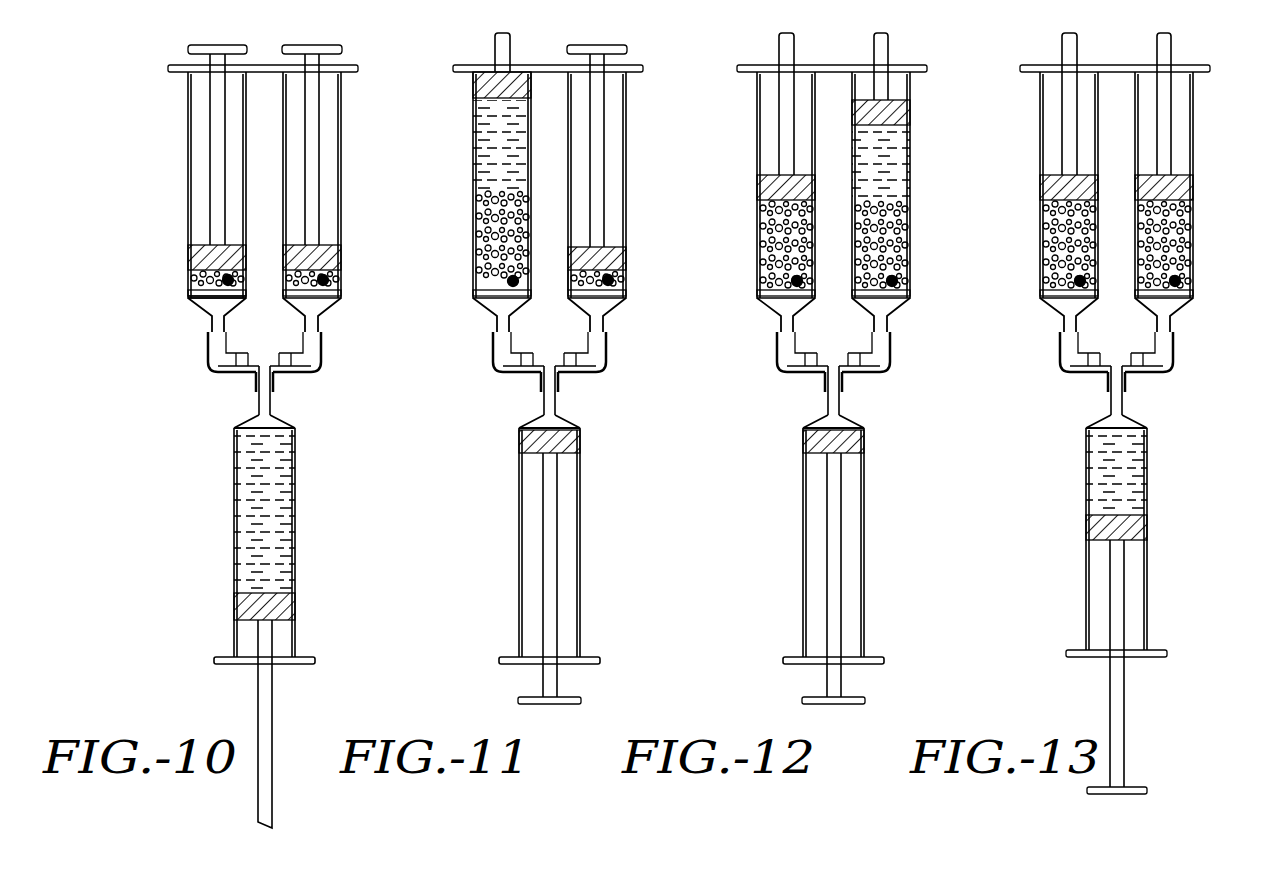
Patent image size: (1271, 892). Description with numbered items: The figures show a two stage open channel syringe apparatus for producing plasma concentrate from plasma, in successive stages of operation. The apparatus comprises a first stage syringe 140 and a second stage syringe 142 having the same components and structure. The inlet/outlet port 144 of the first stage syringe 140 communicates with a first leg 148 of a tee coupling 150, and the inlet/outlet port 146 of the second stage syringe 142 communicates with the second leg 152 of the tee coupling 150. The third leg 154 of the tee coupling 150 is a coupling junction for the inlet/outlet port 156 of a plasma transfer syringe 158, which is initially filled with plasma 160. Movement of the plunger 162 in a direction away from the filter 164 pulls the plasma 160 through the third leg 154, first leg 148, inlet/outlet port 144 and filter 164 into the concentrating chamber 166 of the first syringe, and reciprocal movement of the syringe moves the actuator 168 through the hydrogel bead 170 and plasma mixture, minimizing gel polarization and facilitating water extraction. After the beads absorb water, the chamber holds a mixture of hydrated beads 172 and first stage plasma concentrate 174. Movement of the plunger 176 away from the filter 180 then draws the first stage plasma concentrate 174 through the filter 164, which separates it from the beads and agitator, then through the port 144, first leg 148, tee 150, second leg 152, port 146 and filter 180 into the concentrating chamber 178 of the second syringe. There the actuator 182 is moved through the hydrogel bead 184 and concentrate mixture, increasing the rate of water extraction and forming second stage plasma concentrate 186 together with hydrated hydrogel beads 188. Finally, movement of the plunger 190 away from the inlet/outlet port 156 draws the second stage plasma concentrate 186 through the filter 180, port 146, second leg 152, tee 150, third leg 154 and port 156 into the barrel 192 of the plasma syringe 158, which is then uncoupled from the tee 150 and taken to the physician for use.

In FIG. 10, the first stage syringe 140 is at (180, 171).
In FIG. 11, the first stage syringe 140 is at (481, 165).
In FIG. 12, the first stage syringe 140 is at (752, 137).
In FIG. 13, the first stage syringe 140 is at (1046, 165).
In FIG. 10, the second stage syringe 142 is at (347, 171).
In FIG. 11, the second stage syringe 142 is at (630, 171).
In FIG. 12, the second stage syringe 142 is at (930, 160).
In FIG. 13, the second stage syringe 142 is at (1201, 165).
In FIG. 10, the inlet/outlet port 144 is at (189, 315).
In FIG. 11, the inlet/outlet port 144 is at (482, 315).
In FIG. 12, the inlet/outlet port 144 is at (772, 316).
In FIG. 10, the inlet/outlet port 146 is at (329, 315).
In FIG. 11, the inlet/outlet port 146 is at (612, 316).
In FIG. 12, the inlet/outlet port 146 is at (893, 312).
In FIG. 13, the inlet/outlet port 146 is at (1178, 316).
In FIG. 10, the first leg 148 is at (203, 352).
In FIG. 11, the first leg 148 is at (491, 352).
In FIG. 12, the first leg 148 is at (779, 364).
In FIG. 13, the first leg 148 is at (1062, 352).
In FIG. 10, the tee coupling 150 is at (258, 367).
In FIG. 11, the tee coupling 150 is at (547, 367).
In FIG. 12, the tee coupling 150 is at (833, 367).
In FIG. 13, the tee coupling 150 is at (1122, 367).
In FIG. 10, the second leg 152 is at (319, 352).
In FIG. 11, the second leg 152 is at (606, 352).
In FIG. 12, the second leg 152 is at (892, 366).
In FIG. 13, the second leg 152 is at (1177, 352).
In FIG. 10, the third leg 154 is at (286, 390).
In FIG. 13, the third leg 154 is at (1142, 390).
In FIG. 10, the inlet/outlet port 156 is at (280, 413).
In FIG. 13, the inlet/outlet port 156 is at (1097, 413).
In FIG. 10, the plasma transfer syringe 158 is at (268, 628).
In FIG. 13, the plasma transfer syringe 158 is at (1130, 611).
In FIG. 10, the plasma 160 is at (228, 512).
In FIG. 10, the plunger 162 is at (189, 257).
In FIG. 11, the plunger 162 is at (533, 262).
In FIG. 12, the plunger 162 is at (815, 186).
In FIG. 10, the filter 164 is at (236, 304).
In FIG. 11, the filter 164 is at (480, 295).
In FIG. 10, the concentrating chamber 166 is at (188, 275).
In FIG. 10, the actuator 168 is at (252, 266).
In FIG. 11, the actuator 168 is at (535, 267).
In FIG. 10, the hydrogel beads 170 is at (189, 292).
In FIG. 11, the hydrated beads 172 is at (519, 234).
In FIG. 12, the hydrated beads 172 is at (758, 230).
In FIG. 11, the first stage plasma concentrate 174 is at (517, 145).
In FIG. 11, the plunger 176 is at (622, 249).
In FIG. 12, the plunger 176 is at (910, 118).
In FIG. 11, the concentrating chamber 178 is at (624, 266).
In FIG. 11, the filter 180 is at (622, 295).
In FIG. 12, the filter 180 is at (909, 292).
In FIG. 13, the filter 180 is at (1190, 292).
In FIG. 11, the actuator 182 is at (640, 277).
In FIG. 12, the actuator 182 is at (911, 284).
In FIG. 13, the actuator 182 is at (1208, 275).
In FIG. 11, the hydrogel beads 184 is at (552, 290).
In FIG. 12, the second stage plasma concentrate 186 is at (910, 180).
In FIG. 13, the second stage plasma concentrate 186 is at (1090, 473).
In FIG. 12, the hydrated hydrogel beads 188 is at (911, 228).
In FIG. 13, the hydrated hydrogel beads 188 is at (1187, 244).
In FIG. 13, the plunger 190 is at (1087, 530).
In FIG. 13, the barrel 192 is at (1142, 542).